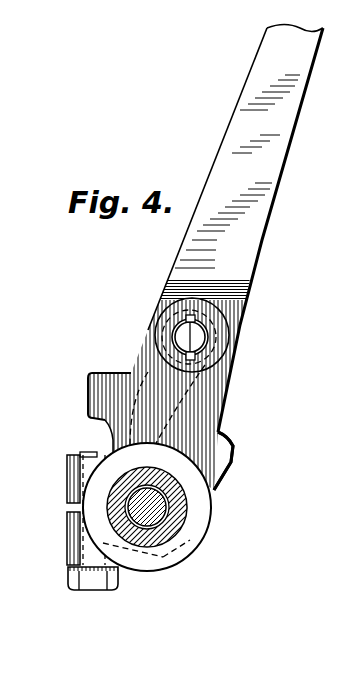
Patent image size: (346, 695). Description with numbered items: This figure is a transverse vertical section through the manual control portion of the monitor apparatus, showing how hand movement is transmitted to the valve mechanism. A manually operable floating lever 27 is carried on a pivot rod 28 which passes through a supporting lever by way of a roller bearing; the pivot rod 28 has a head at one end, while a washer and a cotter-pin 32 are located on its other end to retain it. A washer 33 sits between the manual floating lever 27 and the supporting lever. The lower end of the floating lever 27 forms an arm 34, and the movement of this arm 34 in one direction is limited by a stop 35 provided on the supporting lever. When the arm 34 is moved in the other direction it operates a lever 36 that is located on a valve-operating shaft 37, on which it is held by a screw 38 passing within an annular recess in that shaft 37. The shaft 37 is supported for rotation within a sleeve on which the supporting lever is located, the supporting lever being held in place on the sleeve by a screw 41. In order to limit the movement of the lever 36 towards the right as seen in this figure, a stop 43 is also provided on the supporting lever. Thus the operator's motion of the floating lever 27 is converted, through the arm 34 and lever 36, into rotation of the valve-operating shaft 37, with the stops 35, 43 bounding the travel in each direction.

The floating lever 27 is at (273, 163).
The pivot rod 28 is at (176, 340).
The cotter-pin 32 is at (205, 312).
The washer 33 is at (212, 366).
The arm 34 is at (105, 430).
The stop 35 is at (97, 397).
The lever 36 is at (193, 412).
The valve-operating shaft 37 is at (185, 523).
The screw 38 is at (75, 528).
The screw 41 is at (93, 590).
The stop 43 is at (218, 458).